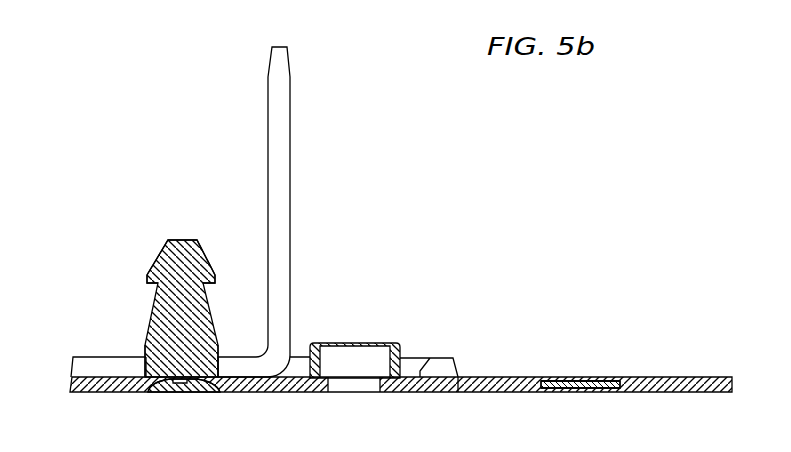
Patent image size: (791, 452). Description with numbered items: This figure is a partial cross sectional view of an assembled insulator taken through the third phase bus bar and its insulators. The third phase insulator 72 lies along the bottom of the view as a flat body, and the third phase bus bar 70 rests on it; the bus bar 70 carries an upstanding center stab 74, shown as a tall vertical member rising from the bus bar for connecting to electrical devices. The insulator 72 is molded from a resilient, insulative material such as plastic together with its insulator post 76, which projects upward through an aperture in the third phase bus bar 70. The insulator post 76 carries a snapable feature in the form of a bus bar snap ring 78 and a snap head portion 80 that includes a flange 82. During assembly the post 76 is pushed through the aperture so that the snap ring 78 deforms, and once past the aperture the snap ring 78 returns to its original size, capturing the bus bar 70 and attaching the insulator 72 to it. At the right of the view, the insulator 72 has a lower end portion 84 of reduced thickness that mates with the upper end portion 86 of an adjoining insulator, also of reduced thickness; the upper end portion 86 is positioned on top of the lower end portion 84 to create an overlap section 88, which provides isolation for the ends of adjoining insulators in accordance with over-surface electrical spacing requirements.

The third phase bus bar 70 is at (70, 370).
The third phase insulator 72 is at (258, 393).
The upstanding center stab 74 is at (290, 92).
The insulator post 76 is at (153, 317).
The bus bar snap ring 78 is at (143, 353).
The snap head portion 80 is at (162, 242).
The flange 82 is at (207, 283).
The lower end portion 84 is at (595, 392).
The upper end portion 86 is at (602, 378).
The overlap section 88 is at (580, 378).